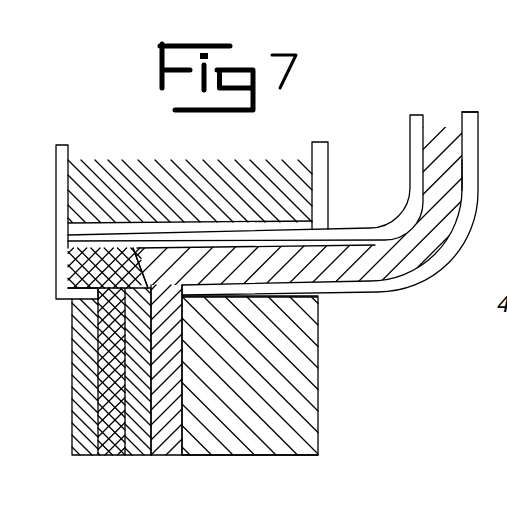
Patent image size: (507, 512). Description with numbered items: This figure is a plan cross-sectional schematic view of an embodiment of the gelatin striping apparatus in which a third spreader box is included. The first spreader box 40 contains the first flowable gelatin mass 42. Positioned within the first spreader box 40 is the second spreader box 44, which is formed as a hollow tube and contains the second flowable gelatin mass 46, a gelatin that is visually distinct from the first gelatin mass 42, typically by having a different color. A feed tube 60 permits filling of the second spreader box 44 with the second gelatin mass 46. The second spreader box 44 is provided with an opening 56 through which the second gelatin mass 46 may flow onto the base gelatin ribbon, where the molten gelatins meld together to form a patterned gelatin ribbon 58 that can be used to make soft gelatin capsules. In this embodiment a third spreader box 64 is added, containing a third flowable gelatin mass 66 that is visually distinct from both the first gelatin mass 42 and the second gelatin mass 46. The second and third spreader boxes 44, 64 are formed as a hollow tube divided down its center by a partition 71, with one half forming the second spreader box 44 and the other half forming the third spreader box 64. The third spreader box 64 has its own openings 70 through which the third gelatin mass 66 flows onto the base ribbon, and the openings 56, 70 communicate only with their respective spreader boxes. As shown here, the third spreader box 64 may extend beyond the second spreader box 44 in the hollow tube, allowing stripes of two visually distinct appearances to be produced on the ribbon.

The first spreader box 40 is at (327, 152).
The first flowable gelatin mass 42 is at (253, 163).
The second spreader box 44 is at (357, 289).
The second flowable gelatin mass 46 is at (455, 145).
The opening 56 is at (227, 297).
The patterned gelatin ribbon 58 is at (318, 389).
The feed tube 60 is at (481, 118).
The third spreader box 64 is at (63, 253).
The third flowable gelatin mass 66 is at (72, 275).
The openings 70 is at (80, 330).
The partition 71 is at (132, 248).